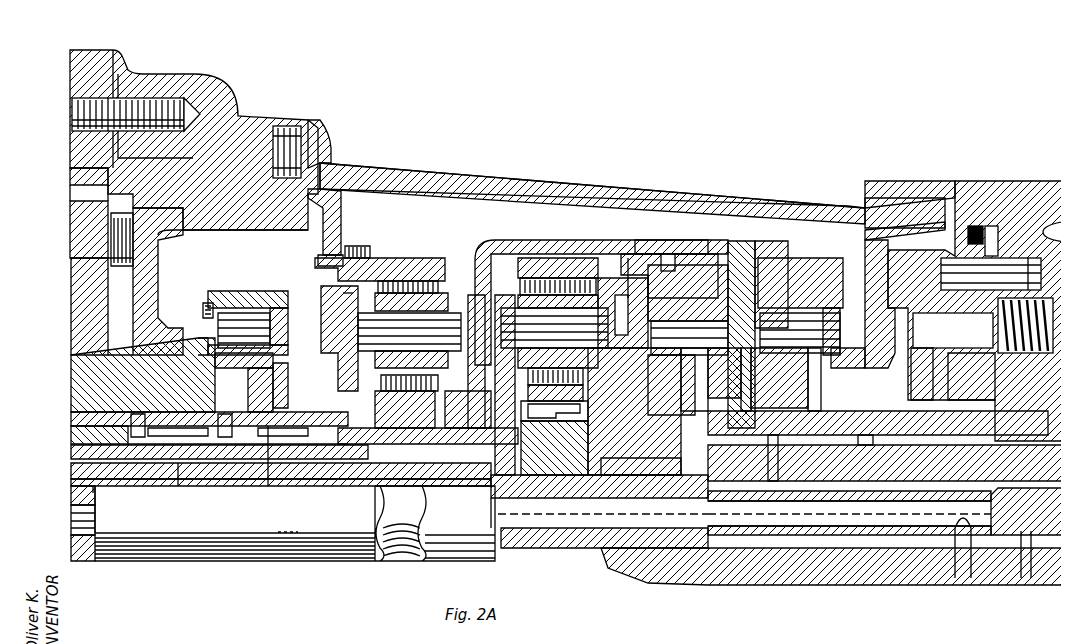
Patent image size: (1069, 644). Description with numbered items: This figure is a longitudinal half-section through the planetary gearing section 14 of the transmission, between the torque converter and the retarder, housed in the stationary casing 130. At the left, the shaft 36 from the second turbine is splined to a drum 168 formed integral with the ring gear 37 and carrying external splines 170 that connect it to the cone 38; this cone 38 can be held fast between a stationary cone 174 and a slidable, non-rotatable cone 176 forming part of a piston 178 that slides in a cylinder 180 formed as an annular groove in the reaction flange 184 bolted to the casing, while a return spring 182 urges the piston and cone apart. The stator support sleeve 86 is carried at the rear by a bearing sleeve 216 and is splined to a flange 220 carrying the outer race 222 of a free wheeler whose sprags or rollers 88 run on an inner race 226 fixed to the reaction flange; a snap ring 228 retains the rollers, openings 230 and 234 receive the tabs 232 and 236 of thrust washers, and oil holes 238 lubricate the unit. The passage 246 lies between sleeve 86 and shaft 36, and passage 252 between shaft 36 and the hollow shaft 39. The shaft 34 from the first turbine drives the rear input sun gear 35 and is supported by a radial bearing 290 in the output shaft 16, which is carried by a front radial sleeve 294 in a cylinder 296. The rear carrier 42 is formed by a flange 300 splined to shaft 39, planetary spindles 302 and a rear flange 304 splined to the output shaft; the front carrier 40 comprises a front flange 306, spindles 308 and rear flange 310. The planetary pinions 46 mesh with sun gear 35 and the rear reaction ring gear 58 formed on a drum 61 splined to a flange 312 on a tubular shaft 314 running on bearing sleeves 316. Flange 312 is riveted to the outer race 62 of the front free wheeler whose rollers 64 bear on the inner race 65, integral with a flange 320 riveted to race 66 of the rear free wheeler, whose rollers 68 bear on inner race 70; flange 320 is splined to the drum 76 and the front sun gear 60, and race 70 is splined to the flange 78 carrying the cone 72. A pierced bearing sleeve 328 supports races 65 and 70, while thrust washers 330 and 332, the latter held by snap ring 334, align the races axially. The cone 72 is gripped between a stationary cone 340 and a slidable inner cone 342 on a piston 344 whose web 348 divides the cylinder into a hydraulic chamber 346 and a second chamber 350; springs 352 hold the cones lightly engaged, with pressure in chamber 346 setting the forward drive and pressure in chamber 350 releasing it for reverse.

The ring 14 is at (500, 242).
The transmission output shaft 16 is at (678, 570).
The shaft 34 is at (160, 522).
The rear input sun gear 35 is at (565, 455).
The shaft 36 is at (75, 453).
The ring gear 37 is at (405, 257).
The cone 38 is at (335, 205).
The hollow shaft 39 is at (70, 470).
The carrier 40 is at (325, 295).
The rear carrier 42 is at (498, 300).
The planetary pinions 46 is at (562, 290).
The rear reaction ring gear 58 is at (538, 258).
The front sun gear 60 is at (428, 458).
The drum 61 is at (622, 262).
The outer race 62 is at (733, 255).
The sprags or rollers 64 is at (688, 328).
The inner race 65 is at (625, 352).
The race 66 is at (812, 278).
The sprags or rollers 68 is at (780, 345).
The inner race 70 is at (858, 352).
The cone 72 is at (940, 205).
The drum 76 is at (604, 245).
The flange 78 is at (865, 330).
The stator support sleeve 86 is at (75, 432).
The sprags or rollers 88 is at (236, 312).
The stationary casing 130 is at (128, 70).
The drum 168 is at (312, 248).
The external splines 170 is at (368, 250).
The stationary cone 174 is at (323, 150).
The slidable cone 176 is at (225, 214).
The piston 178 is at (152, 278).
The cylinder 180 is at (70, 184).
The return spring 182 is at (225, 162).
The reaction flange 184 is at (75, 122).
The bearing sleeve 216 is at (75, 412).
The flange 220 is at (275, 322).
The outer race 222 is at (258, 300).
The inner race 226 is at (197, 338).
The snap ring 228 is at (200, 300).
The openings 230 is at (275, 345).
The tabs 232 is at (285, 365).
The openings 234 is at (285, 380).
The tabs 236 is at (285, 395).
The oil holes 238 is at (260, 472).
The passage 246 is at (96, 470).
The passage 252 is at (170, 470).
The radial bearing 290 is at (600, 488).
The front radial sleeve 294 is at (960, 440).
The cylinder 296 is at (980, 360).
The flange 300 is at (472, 462).
The planetary spindles 302 is at (470, 305).
The rear flange 304 is at (578, 300).
The front flange 306 is at (338, 478).
The planetary spindles 308 is at (345, 290).
The rear flange 310 is at (445, 285).
The flange 312 is at (660, 262).
The tubular shaft 314 is at (770, 432).
The bearing sleeves 316 is at (705, 432).
The flange 320 is at (755, 245).
The bearing sleeve 328 is at (712, 357).
The radial thrust washer 330 is at (638, 433).
The radial thrust washer 332 is at (810, 432).
The snap ring 334 is at (855, 433).
The stationary cone 340 is at (878, 190).
The slidable inner cone 342 is at (875, 243).
The piston 344 is at (985, 215).
The hydraulic chamber 346 is at (995, 345).
The web 348 is at (992, 330).
The second chamber 350 is at (910, 345).
The springs 352 is at (970, 312).